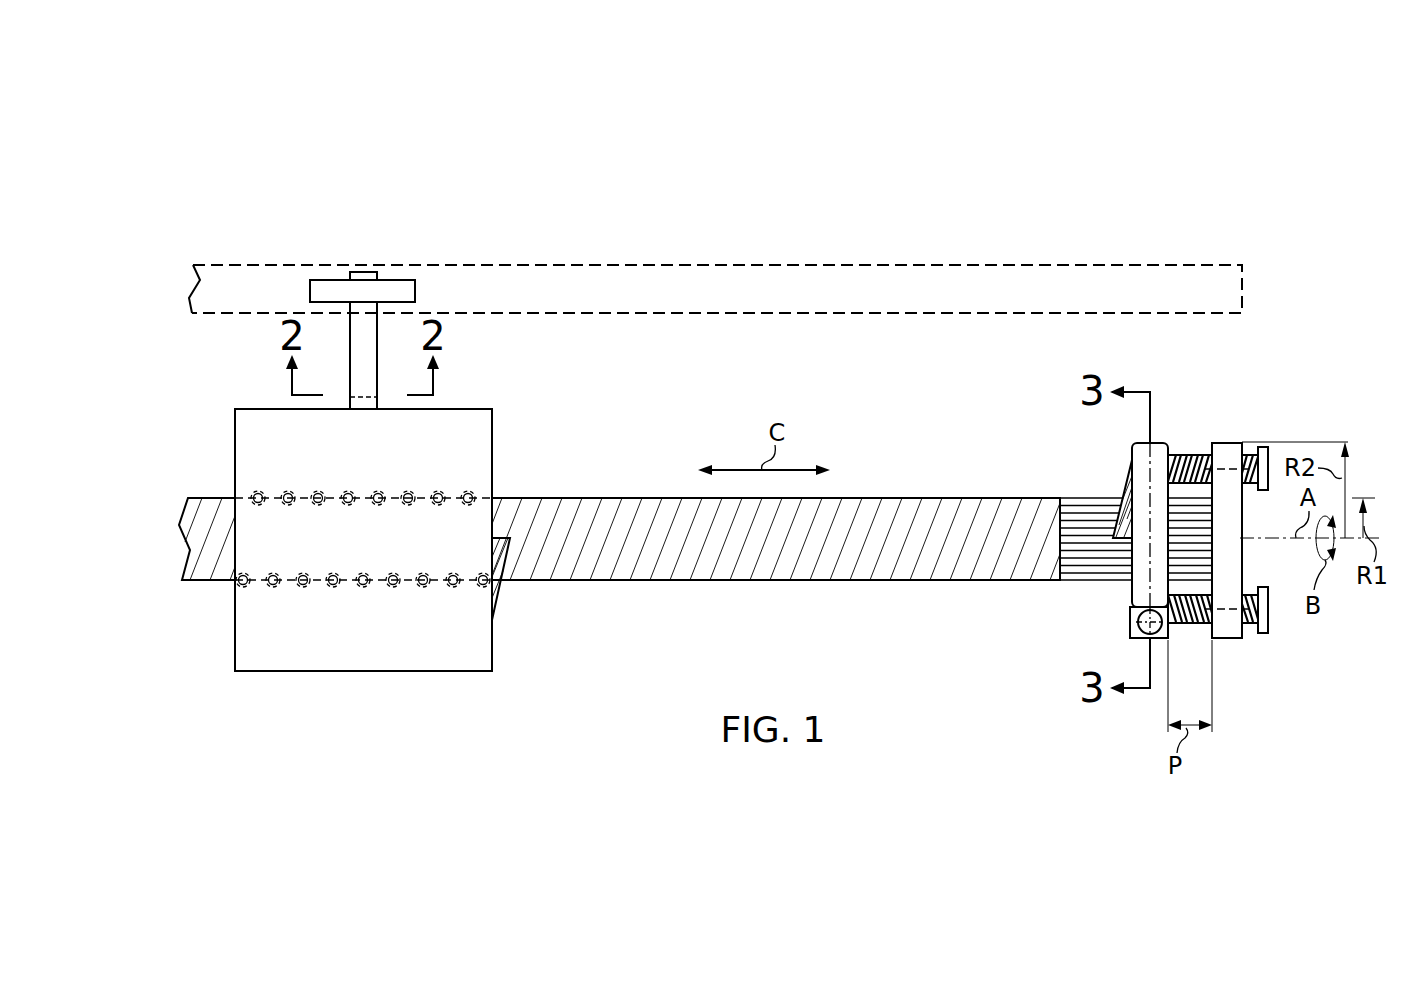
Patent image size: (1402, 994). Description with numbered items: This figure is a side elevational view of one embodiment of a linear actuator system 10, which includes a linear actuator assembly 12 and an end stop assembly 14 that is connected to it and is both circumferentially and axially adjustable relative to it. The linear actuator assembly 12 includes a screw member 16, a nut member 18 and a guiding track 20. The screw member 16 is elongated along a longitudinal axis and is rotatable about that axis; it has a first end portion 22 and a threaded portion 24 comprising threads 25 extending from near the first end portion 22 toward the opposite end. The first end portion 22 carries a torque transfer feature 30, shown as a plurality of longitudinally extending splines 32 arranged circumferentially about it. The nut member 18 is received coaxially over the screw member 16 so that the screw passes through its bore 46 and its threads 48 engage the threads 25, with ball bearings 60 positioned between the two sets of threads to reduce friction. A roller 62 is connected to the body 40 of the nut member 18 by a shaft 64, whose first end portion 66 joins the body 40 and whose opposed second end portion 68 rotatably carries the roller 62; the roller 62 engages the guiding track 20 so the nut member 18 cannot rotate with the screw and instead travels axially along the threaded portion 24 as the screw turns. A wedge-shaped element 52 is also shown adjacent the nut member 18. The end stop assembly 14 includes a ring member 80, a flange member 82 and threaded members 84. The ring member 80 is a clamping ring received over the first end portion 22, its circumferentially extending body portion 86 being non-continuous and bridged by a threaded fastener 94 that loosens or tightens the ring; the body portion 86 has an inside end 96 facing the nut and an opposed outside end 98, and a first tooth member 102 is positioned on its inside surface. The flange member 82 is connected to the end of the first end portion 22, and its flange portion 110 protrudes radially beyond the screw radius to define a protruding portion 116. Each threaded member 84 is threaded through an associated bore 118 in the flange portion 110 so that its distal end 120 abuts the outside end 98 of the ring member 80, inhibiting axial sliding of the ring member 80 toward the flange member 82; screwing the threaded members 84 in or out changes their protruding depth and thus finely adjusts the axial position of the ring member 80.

The linear actuator system 10 is at (1134, 134).
The linear actuator assembly 12 is at (283, 782).
The end stop assembly 14 is at (1278, 686).
The screw member 16 is at (727, 580).
The nut member 18 is at (428, 671).
The guiding track 20 is at (468, 265).
The first end portion 22 is at (1050, 424).
The threaded portion 24 is at (936, 464).
The threads 25 is at (885, 580).
The torque transfer feature 30 is at (1068, 580).
The splines 32 is at (1065, 500).
The body 40 is at (473, 409).
The bore 46 is at (412, 505).
The threads 48 is at (349, 492).
The wedge 52 is at (505, 598).
The ball bearings 60 is at (289, 493).
The roller 62 is at (392, 280).
The shaft 64 is at (378, 376).
The first end portion 66 is at (378, 404).
The second end portion 68 is at (361, 272).
The ring member 80 is at (1141, 443).
The flange member 82 is at (1228, 443).
The threaded members 84 is at (1184, 455).
The body portion 86 is at (1135, 460).
The threaded fastener 94 is at (1132, 630).
The inside end 96 is at (1131, 604).
The outside end 98 is at (1168, 640).
The first tooth member 102 is at (1120, 495).
The flange portion 110 is at (1244, 538).
The protruding portion 116 is at (1272, 432).
The bores 118 is at (1245, 482).
The distal ends 120 is at (1172, 426).